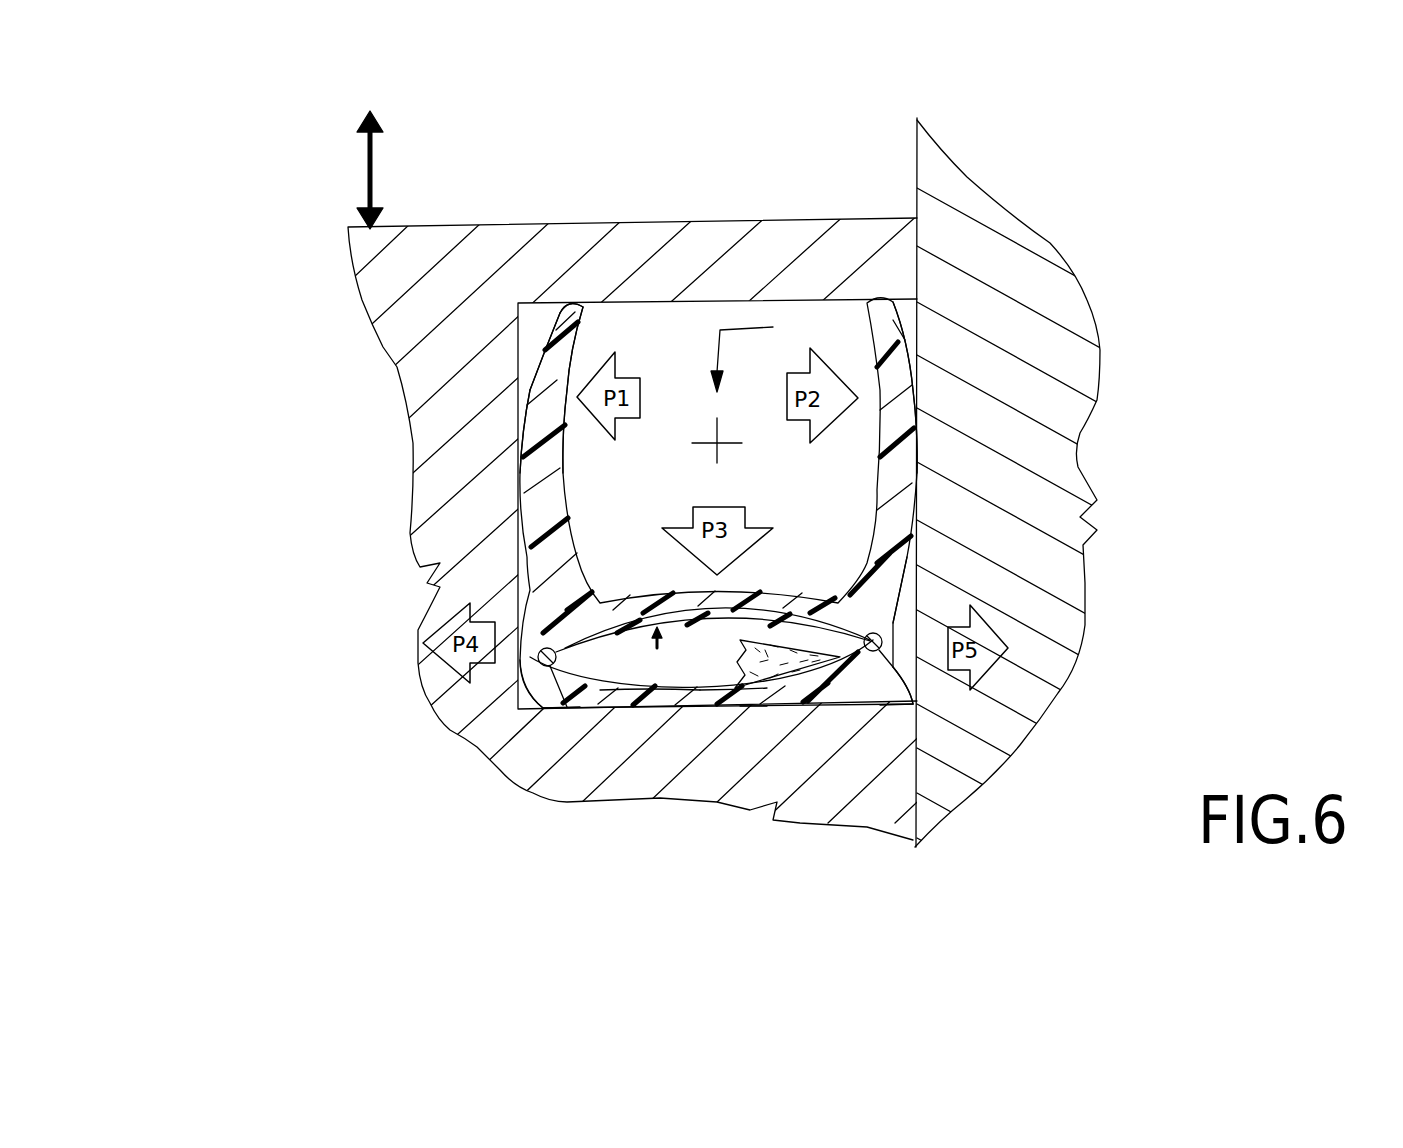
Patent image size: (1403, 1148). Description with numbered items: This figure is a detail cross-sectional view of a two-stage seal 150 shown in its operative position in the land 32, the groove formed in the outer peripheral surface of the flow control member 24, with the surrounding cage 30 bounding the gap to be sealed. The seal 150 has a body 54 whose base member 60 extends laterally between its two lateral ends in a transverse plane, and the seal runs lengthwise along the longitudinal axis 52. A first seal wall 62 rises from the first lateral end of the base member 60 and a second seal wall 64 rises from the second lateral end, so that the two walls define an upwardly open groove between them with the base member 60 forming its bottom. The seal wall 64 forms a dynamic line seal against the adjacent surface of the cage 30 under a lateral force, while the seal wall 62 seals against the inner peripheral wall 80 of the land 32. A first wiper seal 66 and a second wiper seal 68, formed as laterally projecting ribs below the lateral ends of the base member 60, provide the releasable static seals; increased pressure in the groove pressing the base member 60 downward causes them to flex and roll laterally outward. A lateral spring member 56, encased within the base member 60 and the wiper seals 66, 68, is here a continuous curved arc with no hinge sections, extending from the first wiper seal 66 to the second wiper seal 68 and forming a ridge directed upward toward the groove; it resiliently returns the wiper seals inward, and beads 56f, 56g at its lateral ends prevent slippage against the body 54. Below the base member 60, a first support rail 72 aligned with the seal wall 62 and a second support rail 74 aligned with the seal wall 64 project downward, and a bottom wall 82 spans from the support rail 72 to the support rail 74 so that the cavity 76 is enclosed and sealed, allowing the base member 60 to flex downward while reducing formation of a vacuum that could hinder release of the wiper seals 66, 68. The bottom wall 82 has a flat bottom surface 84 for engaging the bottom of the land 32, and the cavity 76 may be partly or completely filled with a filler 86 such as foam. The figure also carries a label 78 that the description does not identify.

The flow control member 24 is at (437, 247).
The cage 30 is at (1033, 282).
The land 32 is at (692, 328).
The longitudinal axis 52 is at (722, 448).
The body 54 is at (514, 424).
The lateral spring member 56 is at (567, 800).
The bead 56f is at (577, 697).
The bead 56g is at (960, 690).
The base member 60 is at (690, 662).
The first seal wall 62 is at (550, 378).
The second seal wall 64 is at (893, 425).
The first wiper seal 66 is at (540, 675).
The second wiper seal 68 is at (917, 700).
The first support rail 72 is at (595, 707).
The second support rail 74 is at (845, 690).
The cavity 76 is at (533, 607).
The second lip outer surface 78 is at (900, 615).
The inner peripheral wall 80 is at (517, 344).
The bottom wall 82 is at (753, 700).
The flat bottom surface 84 is at (717, 662).
The filler 86 is at (780, 668).
The two-stage seal 150 is at (546, 300).